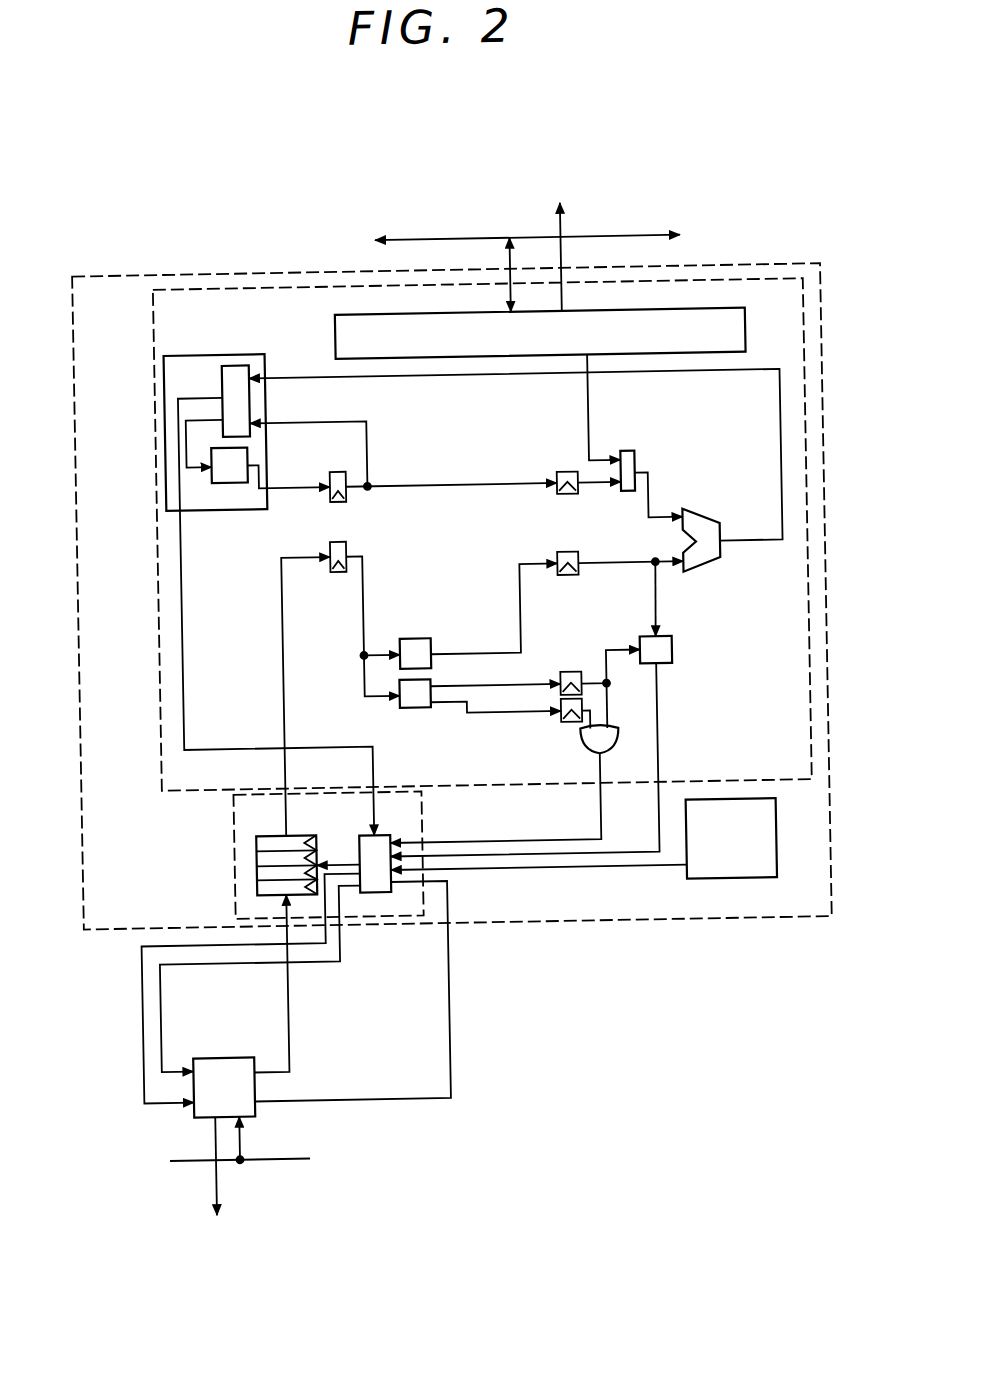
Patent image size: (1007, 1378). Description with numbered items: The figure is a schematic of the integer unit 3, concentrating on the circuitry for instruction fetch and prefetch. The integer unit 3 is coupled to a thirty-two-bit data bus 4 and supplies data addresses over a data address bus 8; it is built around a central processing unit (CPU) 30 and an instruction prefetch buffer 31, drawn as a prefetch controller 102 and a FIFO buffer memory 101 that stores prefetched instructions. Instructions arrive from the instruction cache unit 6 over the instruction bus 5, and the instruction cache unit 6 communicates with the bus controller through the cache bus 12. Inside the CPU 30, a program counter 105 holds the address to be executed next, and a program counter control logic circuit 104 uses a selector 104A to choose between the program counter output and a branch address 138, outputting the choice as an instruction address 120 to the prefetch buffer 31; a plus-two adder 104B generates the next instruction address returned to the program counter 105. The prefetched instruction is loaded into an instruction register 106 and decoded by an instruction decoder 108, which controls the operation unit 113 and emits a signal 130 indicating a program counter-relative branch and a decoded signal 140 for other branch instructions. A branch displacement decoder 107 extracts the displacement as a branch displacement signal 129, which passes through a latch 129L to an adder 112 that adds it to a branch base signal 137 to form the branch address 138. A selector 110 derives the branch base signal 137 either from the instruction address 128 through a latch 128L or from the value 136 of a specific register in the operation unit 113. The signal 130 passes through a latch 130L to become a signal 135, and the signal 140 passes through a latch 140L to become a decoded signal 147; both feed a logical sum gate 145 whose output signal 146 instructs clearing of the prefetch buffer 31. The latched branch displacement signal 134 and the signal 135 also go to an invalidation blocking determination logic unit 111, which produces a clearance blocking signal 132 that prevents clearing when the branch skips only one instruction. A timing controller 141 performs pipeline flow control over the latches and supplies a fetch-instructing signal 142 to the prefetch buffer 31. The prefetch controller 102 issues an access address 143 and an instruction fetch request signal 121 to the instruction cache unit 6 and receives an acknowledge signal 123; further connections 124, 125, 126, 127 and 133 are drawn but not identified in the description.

The integer unit 3 is at (797, 268).
The data bus 4 is at (629, 237).
The instruction bus 5 is at (281, 1055).
The instruction cache unit 6 is at (235, 1053).
The data address bus 8 is at (567, 256).
The cache bus 12 is at (290, 1157).
The central processing unit 30 is at (752, 283).
The instruction prefetch buffer 31 is at (418, 811).
The buffer memory 101 is at (269, 831).
The prefetch controller 102 is at (393, 818).
The program counter control logic circuit 104 is at (188, 350).
The selector 104A is at (237, 361).
The +2 adder 104B is at (234, 478).
The program counter 105 is at (341, 468).
The instruction register 106 is at (350, 542).
The branch displacement decoder 107 is at (416, 637).
The instruction decoder 108 is at (416, 706).
The selector 110 is at (631, 453).
The invalidation blocking determination logic unit 111 is at (672, 653).
The adder 112 is at (723, 556).
The operation unit 113 is at (711, 361).
The instruction address 120 is at (310, 743).
The instruction fetch request signal 121 is at (318, 961).
The acknowledge signal 123 is at (407, 1096).
The address signal line 124 is at (281, 632).
The signal line 125 is at (362, 634).
The control signal line 126 is at (341, 856).
The incremented address line 127 is at (296, 483).
The instruction address 128 is at (474, 483).
The latch 128L is at (569, 473).
The branch displacement signal 129 is at (476, 651).
The latch 129L is at (558, 554).
The signal indicating program counter-relative branch 130 is at (516, 687).
The latch 130L is at (570, 673).
The clearance blocking signal 132 is at (624, 855).
The signal line 133 is at (593, 493).
The branch displacement signal 134 is at (607, 569).
The signal indicating program counter-relative branch 135 is at (612, 649).
The register value 136 is at (591, 392).
The branch base signal 137 is at (652, 483).
The branch address 138 is at (757, 544).
The decoded signal of other branch instructions 140 is at (471, 712).
The latch 140L is at (568, 725).
The timing controller 141 is at (695, 882).
The fetch instructing signal 142 is at (573, 870).
The access address 143 is at (135, 1020).
The logical sum gate 145 is at (616, 746).
The output signal 146 is at (538, 840).
The decoded signal of other branch instructions 147 is at (588, 724).